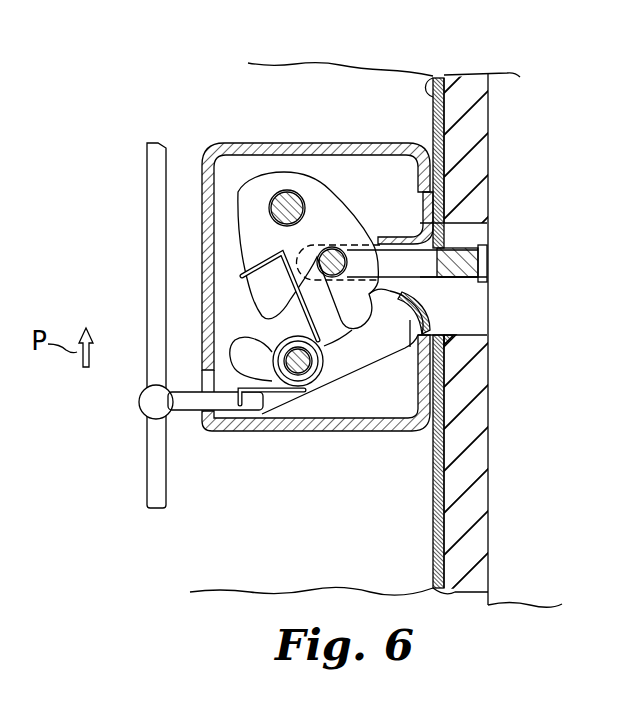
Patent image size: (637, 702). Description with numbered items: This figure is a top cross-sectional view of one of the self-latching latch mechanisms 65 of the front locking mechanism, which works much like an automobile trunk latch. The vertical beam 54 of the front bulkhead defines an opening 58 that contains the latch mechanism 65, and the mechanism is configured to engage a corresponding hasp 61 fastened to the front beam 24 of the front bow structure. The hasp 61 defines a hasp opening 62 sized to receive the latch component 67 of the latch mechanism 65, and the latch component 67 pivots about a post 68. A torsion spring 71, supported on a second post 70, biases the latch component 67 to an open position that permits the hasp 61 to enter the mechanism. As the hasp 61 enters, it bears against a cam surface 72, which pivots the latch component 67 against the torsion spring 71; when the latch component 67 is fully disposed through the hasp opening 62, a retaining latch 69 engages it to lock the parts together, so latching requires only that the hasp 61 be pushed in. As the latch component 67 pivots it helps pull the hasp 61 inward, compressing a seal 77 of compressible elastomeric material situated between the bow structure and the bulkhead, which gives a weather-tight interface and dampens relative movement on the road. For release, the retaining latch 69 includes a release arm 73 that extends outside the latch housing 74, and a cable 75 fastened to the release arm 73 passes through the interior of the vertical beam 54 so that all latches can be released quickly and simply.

The front beam 24 is at (503, 90).
The vertical beam 54 is at (413, 78).
The opening 58 is at (442, 333).
The hasp 61 is at (448, 278).
The hasp opening 62 is at (425, 240).
The latch mechanism 65 is at (284, 302).
The latch component 67 is at (323, 208).
The post 68 is at (287, 196).
The retaining latch 69 is at (342, 352).
The second post 70 is at (316, 395).
The torsion spring 71 is at (246, 412).
The cam surface 72 is at (377, 340).
The release arm 73 is at (183, 410).
The latch housing 74 is at (375, 143).
The cable 75 is at (152, 253).
The seal 77 is at (465, 477).